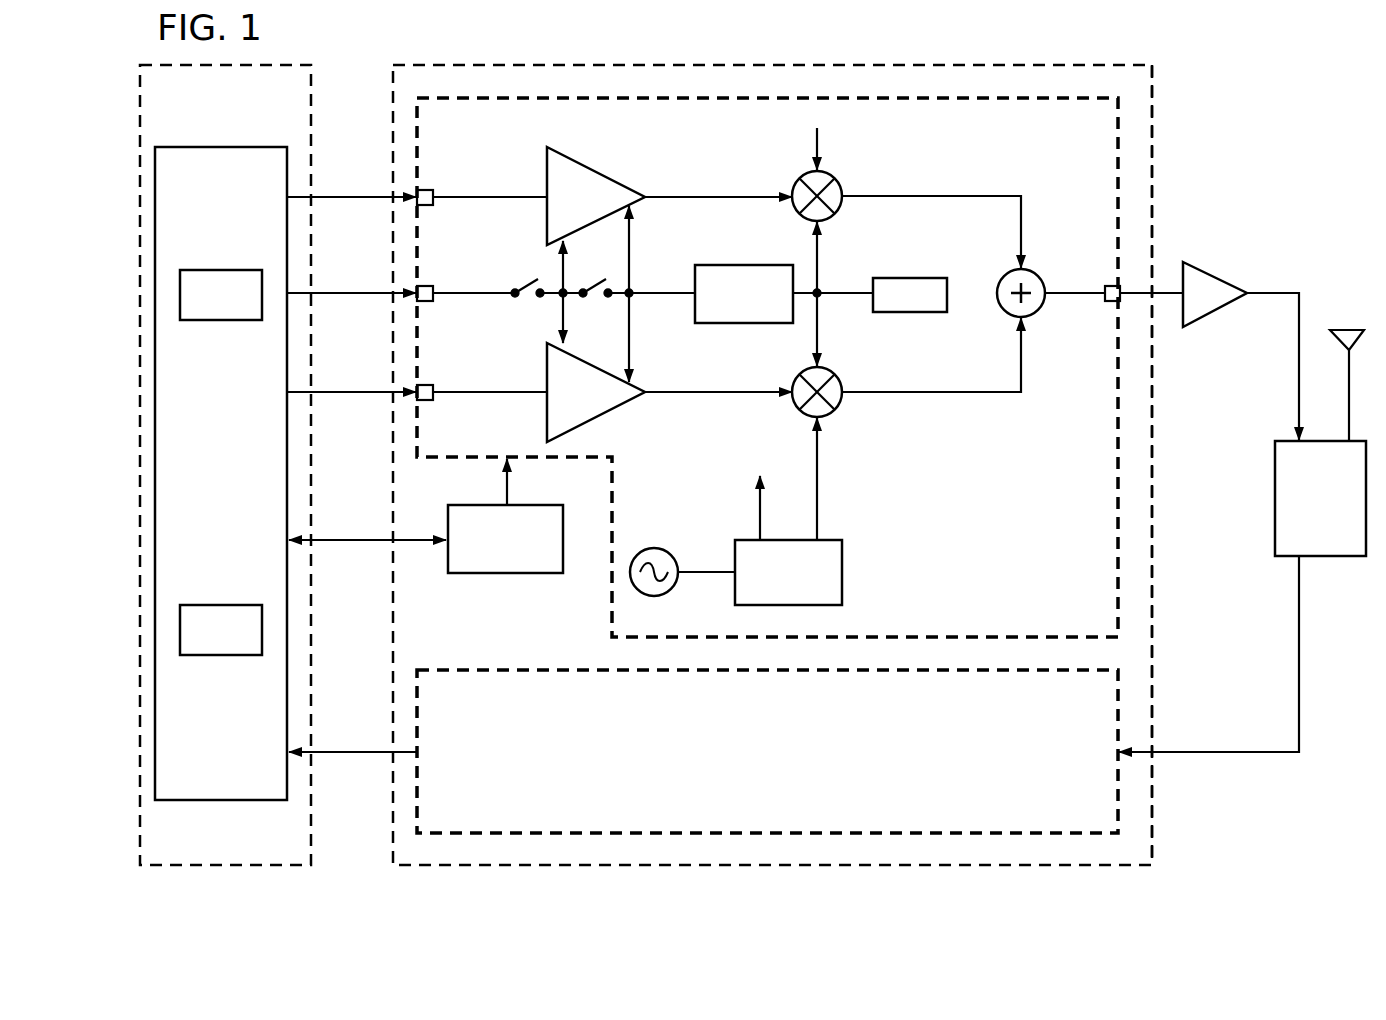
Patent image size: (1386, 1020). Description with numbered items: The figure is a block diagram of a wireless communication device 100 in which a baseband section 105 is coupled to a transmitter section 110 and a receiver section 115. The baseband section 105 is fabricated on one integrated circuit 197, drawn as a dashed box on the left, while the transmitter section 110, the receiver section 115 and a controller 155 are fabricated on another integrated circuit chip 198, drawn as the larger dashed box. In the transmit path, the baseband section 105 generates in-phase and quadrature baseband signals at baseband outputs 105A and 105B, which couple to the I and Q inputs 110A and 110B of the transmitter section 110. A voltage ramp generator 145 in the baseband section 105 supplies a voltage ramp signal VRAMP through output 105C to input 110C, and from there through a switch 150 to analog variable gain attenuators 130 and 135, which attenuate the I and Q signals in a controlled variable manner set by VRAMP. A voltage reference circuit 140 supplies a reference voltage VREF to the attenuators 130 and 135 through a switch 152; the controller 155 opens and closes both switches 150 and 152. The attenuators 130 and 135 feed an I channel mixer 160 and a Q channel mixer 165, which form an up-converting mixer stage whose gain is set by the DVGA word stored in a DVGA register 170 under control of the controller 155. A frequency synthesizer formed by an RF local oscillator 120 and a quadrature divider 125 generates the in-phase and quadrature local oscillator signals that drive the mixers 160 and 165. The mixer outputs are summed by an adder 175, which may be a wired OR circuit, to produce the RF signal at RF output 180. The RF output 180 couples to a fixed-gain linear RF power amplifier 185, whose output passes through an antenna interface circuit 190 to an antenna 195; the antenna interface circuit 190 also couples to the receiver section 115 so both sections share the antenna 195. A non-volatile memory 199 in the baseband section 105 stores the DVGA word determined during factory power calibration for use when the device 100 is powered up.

The wireless communication device 100 is at (705, 45).
The baseband section 105 is at (221, 461).
The baseband output 105A is at (351, 180).
The baseband output 105B is at (351, 375).
The VRAMP output 105C is at (351, 285).
The transmitter section 110 is at (767, 355).
The I input 110A is at (482, 192).
The Q input 110B is at (482, 390).
The VRAMP input 110C is at (466, 288).
The receiver section 115 is at (703, 738).
The RF local oscillator 120 is at (682, 573).
The quadrature divider 125 is at (820, 540).
The analog variable gain attenuator 130 is at (669, 196).
The analog variable gain attenuator 135 is at (669, 393).
The voltage reference circuit 140 is at (784, 283).
The voltage ramp generator 145 is at (221, 282).
The switch 150 is at (544, 275).
The switch 152 is at (633, 283).
The controller 155 is at (426, 516).
The I channel mixer 160 is at (901, 210).
The Q channel mixer 165 is at (906, 416).
The DVGA register 170 is at (918, 282).
The adder 175 is at (1051, 282).
The RF output 180 is at (1117, 309).
The RF power amplifier 185 is at (1241, 345).
The antenna interface circuit 190 is at (1242, 596).
The antenna 195 is at (1325, 357).
The integrated circuit 197 is at (274, 448).
The integrated circuit chip 198 is at (1194, 449).
The non-volatile memory 199 is at (222, 617).